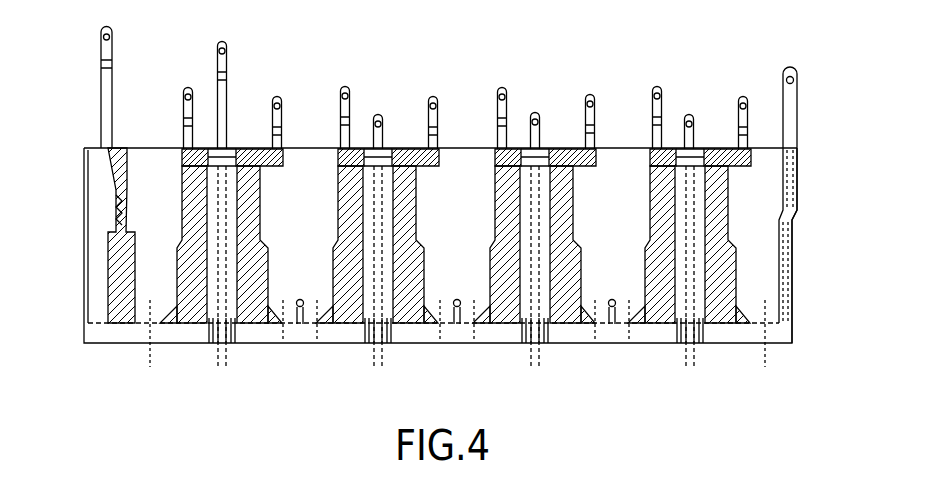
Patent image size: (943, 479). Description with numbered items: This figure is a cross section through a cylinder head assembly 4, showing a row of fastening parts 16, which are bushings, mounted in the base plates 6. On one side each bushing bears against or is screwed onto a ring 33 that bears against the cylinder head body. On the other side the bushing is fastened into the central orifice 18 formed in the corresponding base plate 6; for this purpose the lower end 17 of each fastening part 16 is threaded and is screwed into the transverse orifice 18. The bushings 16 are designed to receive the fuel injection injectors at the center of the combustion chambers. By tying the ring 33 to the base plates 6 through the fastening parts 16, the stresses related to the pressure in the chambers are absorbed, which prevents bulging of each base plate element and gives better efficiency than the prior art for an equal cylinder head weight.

The connector housing 4 is at (93, 212).
The base plate 6 is at (176, 343).
The fastening part 16 is at (213, 207).
The lower end 17 is at (241, 340).
The central orifice 18 is at (212, 345).
The ring 33 is at (262, 165).